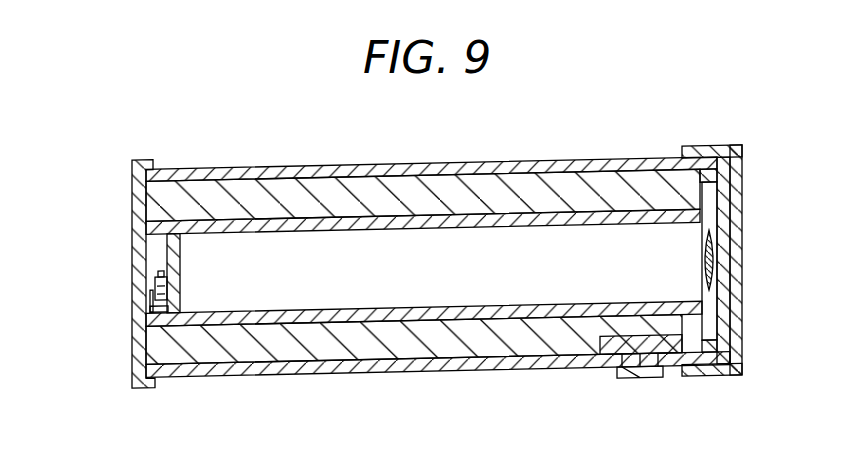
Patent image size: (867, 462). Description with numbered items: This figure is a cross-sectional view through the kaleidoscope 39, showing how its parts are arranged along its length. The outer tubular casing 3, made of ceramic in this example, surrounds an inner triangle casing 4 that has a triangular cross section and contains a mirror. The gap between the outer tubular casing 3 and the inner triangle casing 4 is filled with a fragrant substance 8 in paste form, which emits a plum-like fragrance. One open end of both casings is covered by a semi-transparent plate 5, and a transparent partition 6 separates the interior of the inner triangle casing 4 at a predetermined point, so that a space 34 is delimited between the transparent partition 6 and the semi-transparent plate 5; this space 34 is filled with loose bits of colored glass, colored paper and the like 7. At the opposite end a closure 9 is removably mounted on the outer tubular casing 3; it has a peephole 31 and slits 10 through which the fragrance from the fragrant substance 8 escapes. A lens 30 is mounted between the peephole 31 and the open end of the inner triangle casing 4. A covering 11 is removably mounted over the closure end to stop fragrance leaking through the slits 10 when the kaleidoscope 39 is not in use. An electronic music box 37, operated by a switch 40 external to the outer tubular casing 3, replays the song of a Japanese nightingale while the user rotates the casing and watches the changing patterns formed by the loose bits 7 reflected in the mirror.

The outer tubular casing 3 is at (352, 166).
The inner triangle casing 4 is at (305, 218).
The semi-transparent plate 5 is at (145, 212).
The transparent partition 6 is at (143, 267).
The loose bits of colored glass, colored paper and the like 7 is at (140, 308).
The fragrant substance 8 is at (228, 200).
The closure 9 is at (736, 166).
The slits 10 is at (720, 200).
The covering 11 is at (736, 243).
The lens 30 is at (702, 250).
The peephole 31 is at (726, 269).
The space 34 is at (157, 248).
The electronic music box 37 is at (612, 350).
The kaleidoscope 39 is at (782, 437).
The switch 40 is at (653, 367).